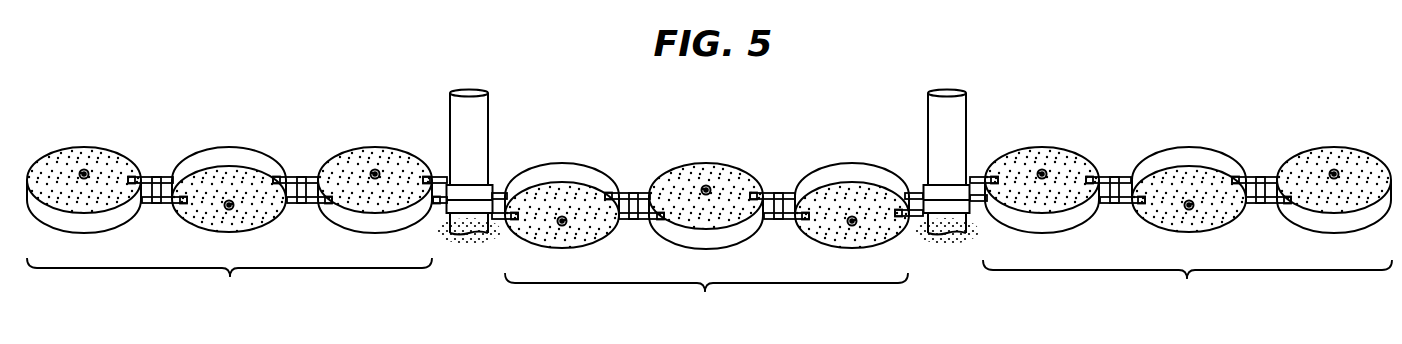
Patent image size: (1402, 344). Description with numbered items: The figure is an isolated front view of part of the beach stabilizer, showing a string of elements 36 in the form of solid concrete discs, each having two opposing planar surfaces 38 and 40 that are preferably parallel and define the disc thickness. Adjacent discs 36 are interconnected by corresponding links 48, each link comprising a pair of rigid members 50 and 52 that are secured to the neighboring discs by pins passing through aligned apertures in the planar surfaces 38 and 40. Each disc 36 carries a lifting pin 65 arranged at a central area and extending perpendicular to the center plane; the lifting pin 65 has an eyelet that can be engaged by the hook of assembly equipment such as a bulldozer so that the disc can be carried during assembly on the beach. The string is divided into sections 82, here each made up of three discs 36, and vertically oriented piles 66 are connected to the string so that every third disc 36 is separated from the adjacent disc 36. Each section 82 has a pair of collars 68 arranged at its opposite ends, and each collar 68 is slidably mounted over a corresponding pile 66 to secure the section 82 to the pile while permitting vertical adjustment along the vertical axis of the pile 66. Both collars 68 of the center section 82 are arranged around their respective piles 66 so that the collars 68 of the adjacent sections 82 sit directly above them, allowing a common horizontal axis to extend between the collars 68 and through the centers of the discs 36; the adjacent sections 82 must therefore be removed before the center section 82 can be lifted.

The element 36 is at (113, 230).
The planar surface 38 is at (113, 167).
The planar surface 40 is at (253, 203).
The link 48 is at (632, 184).
The rigid member 50 is at (648, 188).
The rigid member 52 is at (621, 188).
The lifting pin 65 is at (857, 217).
The pile 66 is at (481, 90).
The collar 68 is at (463, 192).
The section 82 is at (709, 291).